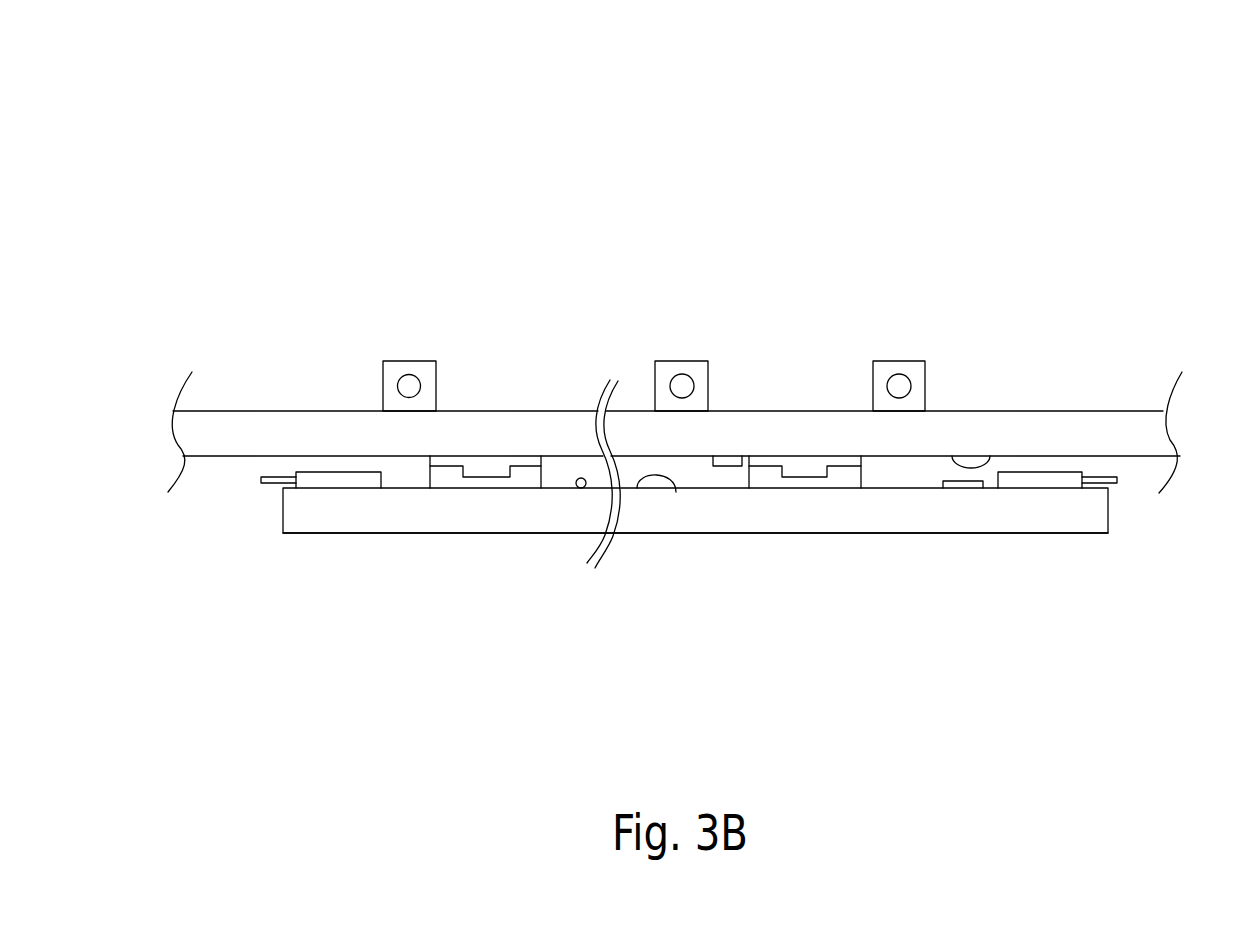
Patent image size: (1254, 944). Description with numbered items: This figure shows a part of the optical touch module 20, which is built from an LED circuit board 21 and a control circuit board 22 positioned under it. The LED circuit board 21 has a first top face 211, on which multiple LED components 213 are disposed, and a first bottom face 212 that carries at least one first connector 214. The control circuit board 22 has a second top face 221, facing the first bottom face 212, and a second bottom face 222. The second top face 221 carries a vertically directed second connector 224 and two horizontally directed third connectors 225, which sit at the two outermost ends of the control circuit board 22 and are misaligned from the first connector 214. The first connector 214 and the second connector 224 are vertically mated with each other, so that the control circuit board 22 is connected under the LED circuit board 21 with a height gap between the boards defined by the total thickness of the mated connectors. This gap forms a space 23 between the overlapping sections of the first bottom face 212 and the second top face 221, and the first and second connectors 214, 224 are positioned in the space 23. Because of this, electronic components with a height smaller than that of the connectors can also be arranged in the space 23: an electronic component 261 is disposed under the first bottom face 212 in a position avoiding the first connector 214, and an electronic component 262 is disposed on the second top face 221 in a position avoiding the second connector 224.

The optical touch module 20 is at (1198, 78).
The LED circuit board 21 is at (788, 435).
The first top face 211 is at (1022, 411).
The first bottom face 212 is at (992, 457).
The LED component 213 is at (882, 373).
The first connector 214 is at (487, 467).
The control circuit board 22 is at (772, 513).
The second top face 221 is at (676, 492).
The second bottom face 222 is at (840, 533).
The second connector 224 is at (448, 474).
The third connector 225 is at (332, 483).
The space 23 is at (935, 465).
The electronic component 261 is at (723, 458).
The electronic component 262 is at (578, 489).